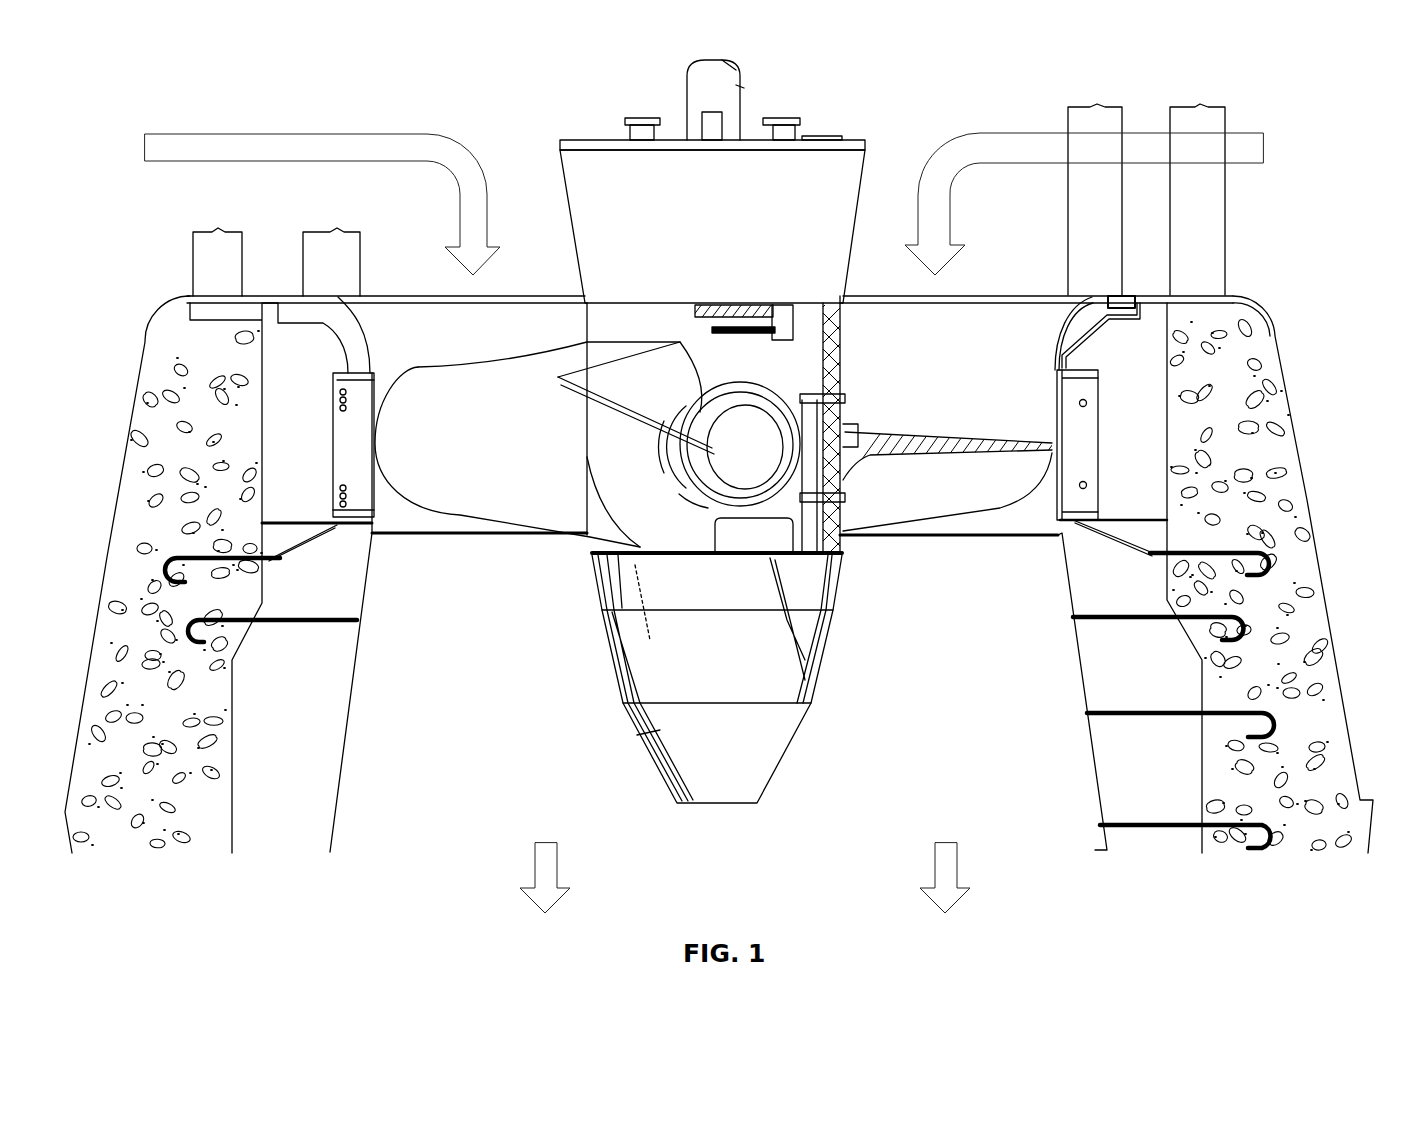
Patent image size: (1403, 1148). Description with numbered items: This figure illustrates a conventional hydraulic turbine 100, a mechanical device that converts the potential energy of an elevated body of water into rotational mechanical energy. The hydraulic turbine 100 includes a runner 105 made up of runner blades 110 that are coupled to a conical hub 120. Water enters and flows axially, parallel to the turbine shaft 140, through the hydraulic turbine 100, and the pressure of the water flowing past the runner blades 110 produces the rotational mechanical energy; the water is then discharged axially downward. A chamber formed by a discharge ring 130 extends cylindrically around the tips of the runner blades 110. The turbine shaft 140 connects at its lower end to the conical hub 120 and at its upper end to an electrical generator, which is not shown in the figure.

The hydraulic turbine 100 is at (175, 85).
The runner 105 is at (532, 168).
The runner blades 110 is at (663, 399).
The conical hub 120 is at (740, 677).
The discharge ring 130 is at (378, 388).
The turbine shaft 140 is at (722, 197).